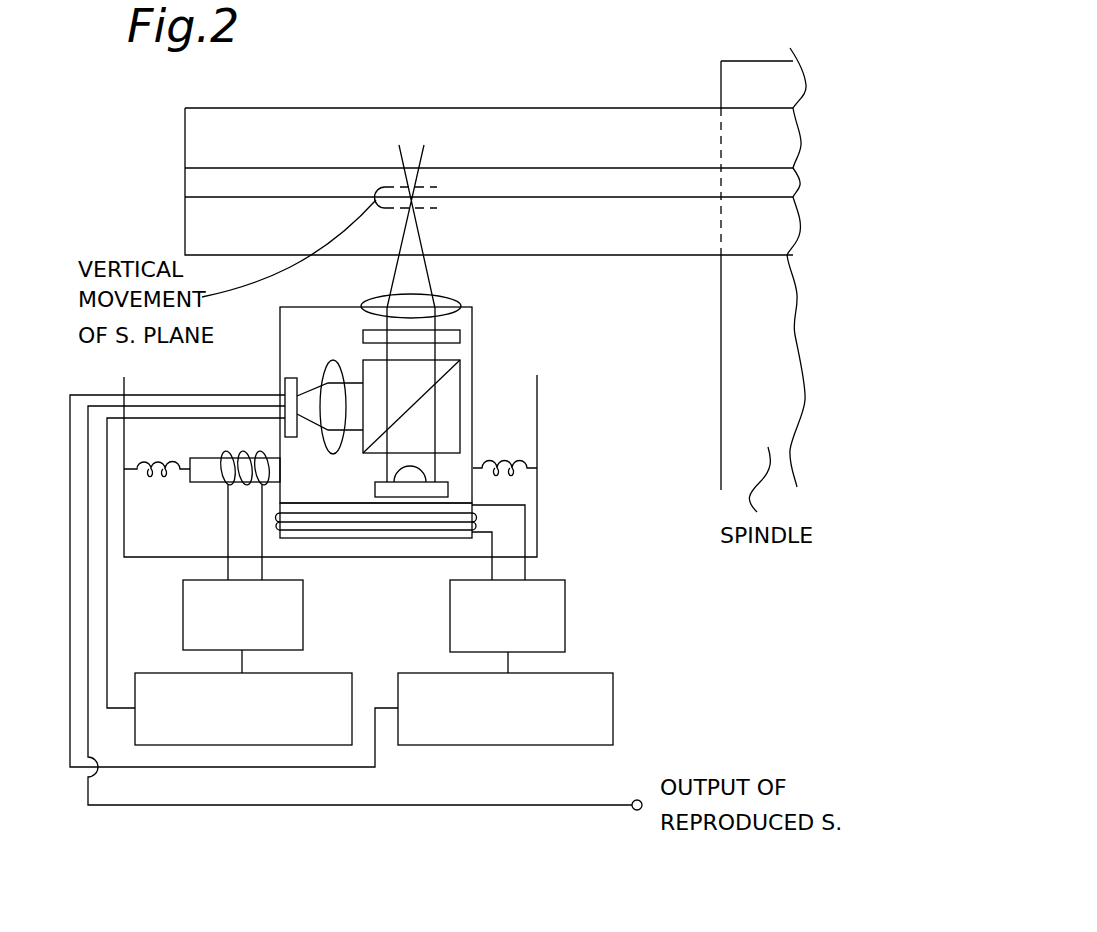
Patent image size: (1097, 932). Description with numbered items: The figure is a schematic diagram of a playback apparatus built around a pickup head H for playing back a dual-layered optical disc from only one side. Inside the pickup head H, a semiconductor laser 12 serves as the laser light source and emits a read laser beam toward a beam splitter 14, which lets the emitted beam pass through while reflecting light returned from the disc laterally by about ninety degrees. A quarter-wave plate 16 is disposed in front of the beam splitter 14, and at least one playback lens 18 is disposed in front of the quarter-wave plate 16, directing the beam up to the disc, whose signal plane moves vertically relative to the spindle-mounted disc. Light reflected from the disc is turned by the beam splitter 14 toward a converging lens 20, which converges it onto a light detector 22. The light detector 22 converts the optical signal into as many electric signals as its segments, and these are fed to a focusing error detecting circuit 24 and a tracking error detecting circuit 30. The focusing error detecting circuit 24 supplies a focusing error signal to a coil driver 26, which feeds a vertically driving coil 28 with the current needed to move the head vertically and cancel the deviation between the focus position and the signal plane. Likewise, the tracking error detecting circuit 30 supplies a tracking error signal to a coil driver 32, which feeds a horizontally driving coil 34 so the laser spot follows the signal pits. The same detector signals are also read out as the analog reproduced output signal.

The semiconductor laser 12 is at (375, 490).
The beam splitter 14 is at (460, 400).
The quarter-wave plate 16 is at (460, 337).
The playback lens 18 is at (380, 302).
The converging lens 20 is at (328, 376).
The light detector 22 is at (289, 378).
The focusing error detecting circuit 24 is at (613, 685).
The coil driver 26 is at (565, 612).
The vertically driving coil 28 is at (375, 538).
The tracking error detecting circuit 30 is at (352, 685).
The coil driver 32 is at (303, 622).
The horizontally driving coil 34 is at (226, 488).
The pickup head H is at (543, 488).